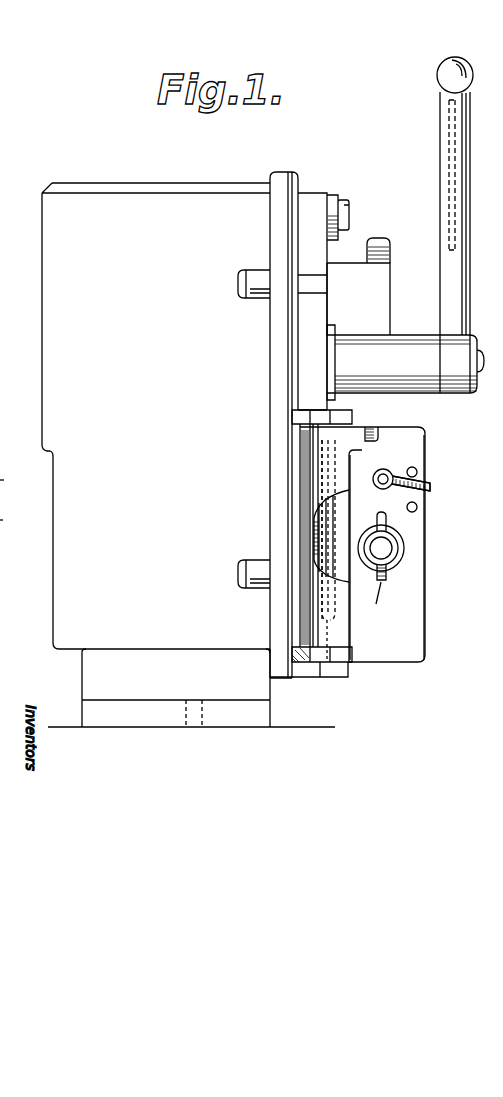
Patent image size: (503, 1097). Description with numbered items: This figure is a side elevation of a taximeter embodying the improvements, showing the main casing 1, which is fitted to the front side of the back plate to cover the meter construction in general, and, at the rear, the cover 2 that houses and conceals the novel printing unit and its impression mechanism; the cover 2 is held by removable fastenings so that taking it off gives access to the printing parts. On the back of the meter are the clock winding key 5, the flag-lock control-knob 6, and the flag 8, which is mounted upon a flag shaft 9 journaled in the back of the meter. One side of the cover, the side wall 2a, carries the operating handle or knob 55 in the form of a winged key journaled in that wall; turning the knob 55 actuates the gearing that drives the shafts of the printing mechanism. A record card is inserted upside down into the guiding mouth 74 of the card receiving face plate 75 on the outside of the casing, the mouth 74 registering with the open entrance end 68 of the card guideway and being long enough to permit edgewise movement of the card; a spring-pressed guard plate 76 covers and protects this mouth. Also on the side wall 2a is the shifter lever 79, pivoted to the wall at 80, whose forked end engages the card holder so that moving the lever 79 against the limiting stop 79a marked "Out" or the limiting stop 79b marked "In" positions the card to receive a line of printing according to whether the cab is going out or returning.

The main casing 1 is at (188, 455).
The cover 2 is at (413, 445).
The side wall of the cover 2a is at (414, 581).
The clock winding key 5 is at (313, 333).
The flag-lock control-knob 6 is at (380, 278).
The flag 8 is at (448, 135).
The flag shaft 9 is at (484, 366).
The operating handle or knob 55 is at (502, 532).
The open end of the guideway 68 is at (317, 548).
The guiding mouth 74 is at (313, 532).
The card receiving face plate 75 is at (313, 522).
The guard plate 76 is at (316, 441).
The shifter lever 79 is at (432, 486).
The limiting stop "Out" 79a is at (420, 472).
The limiting stop "In" 79b is at (420, 508).
The pivot of the shifter lever 80 is at (385, 472).